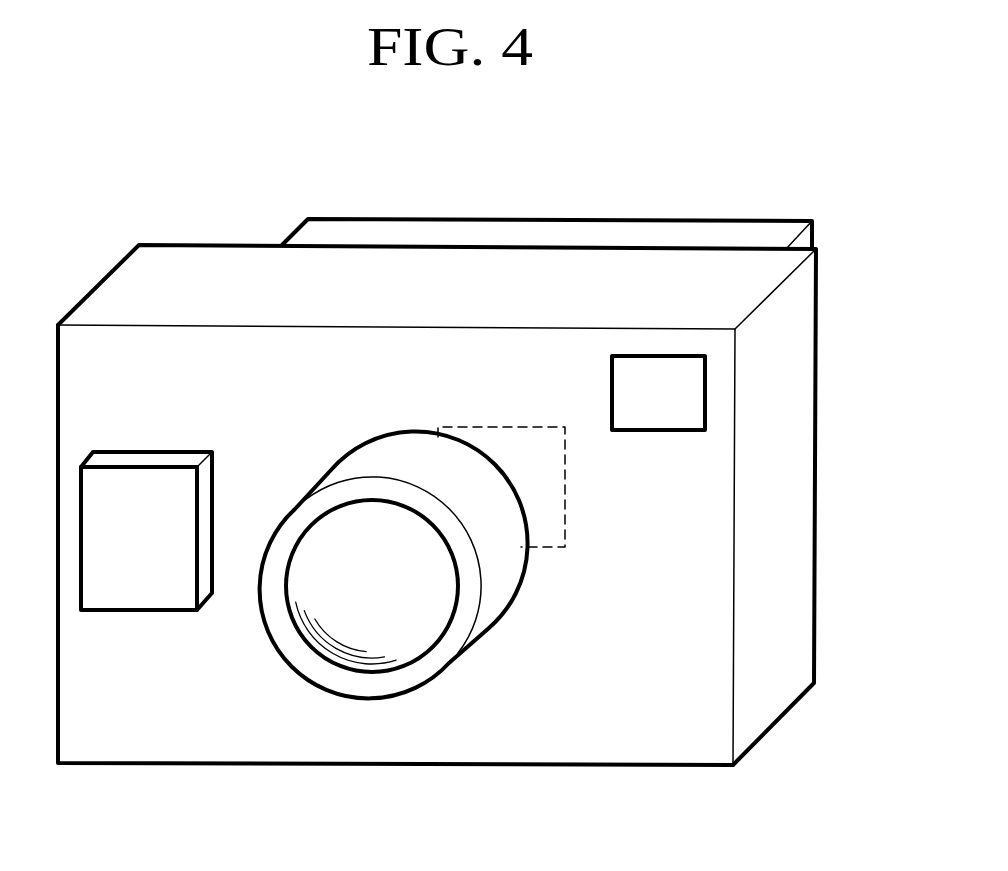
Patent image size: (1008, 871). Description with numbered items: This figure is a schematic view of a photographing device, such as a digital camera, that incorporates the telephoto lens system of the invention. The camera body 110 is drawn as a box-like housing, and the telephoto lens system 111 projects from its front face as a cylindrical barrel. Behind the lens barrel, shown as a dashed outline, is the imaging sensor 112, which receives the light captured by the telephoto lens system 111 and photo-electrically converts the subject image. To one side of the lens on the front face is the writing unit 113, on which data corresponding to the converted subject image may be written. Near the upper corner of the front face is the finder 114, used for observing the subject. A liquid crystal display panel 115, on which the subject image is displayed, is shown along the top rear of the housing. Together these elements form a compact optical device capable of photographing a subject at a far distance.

The camera body (housing) 110 is at (660, 766).
The telephoto lens system 111 is at (372, 656).
The imaging sensor 112 is at (545, 548).
The writing unit 113 is at (138, 603).
The finder 114 is at (697, 400).
The liquid crystal display panel 115 is at (550, 221).